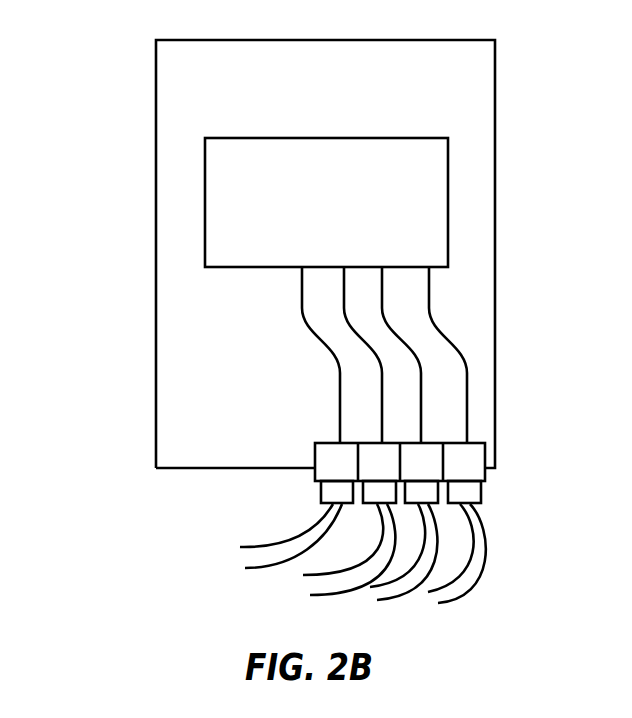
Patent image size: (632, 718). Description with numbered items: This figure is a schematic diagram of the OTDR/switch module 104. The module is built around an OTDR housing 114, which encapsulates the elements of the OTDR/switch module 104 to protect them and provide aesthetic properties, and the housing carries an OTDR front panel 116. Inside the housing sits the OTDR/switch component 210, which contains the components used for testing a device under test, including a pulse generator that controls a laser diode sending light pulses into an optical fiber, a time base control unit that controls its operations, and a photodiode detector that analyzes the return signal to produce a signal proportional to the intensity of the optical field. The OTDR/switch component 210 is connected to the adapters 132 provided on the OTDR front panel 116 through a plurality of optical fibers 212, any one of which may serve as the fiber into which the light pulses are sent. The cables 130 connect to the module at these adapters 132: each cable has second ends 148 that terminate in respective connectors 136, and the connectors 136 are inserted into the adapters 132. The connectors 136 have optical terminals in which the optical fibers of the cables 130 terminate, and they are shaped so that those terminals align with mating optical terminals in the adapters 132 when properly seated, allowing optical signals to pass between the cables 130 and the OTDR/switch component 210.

The OTDR/switch module 104 is at (109, 69).
The OTDR housing 114 is at (156, 218).
The OTDR front panel 116 is at (208, 468).
The OTDR/switch component 210 is at (347, 246).
The optical fibers 212 is at (308, 331).
The adapters 132 is at (485, 443).
The connectors 136 is at (483, 488).
The second ends 148 is at (480, 507).
The cables 130 is at (401, 564).